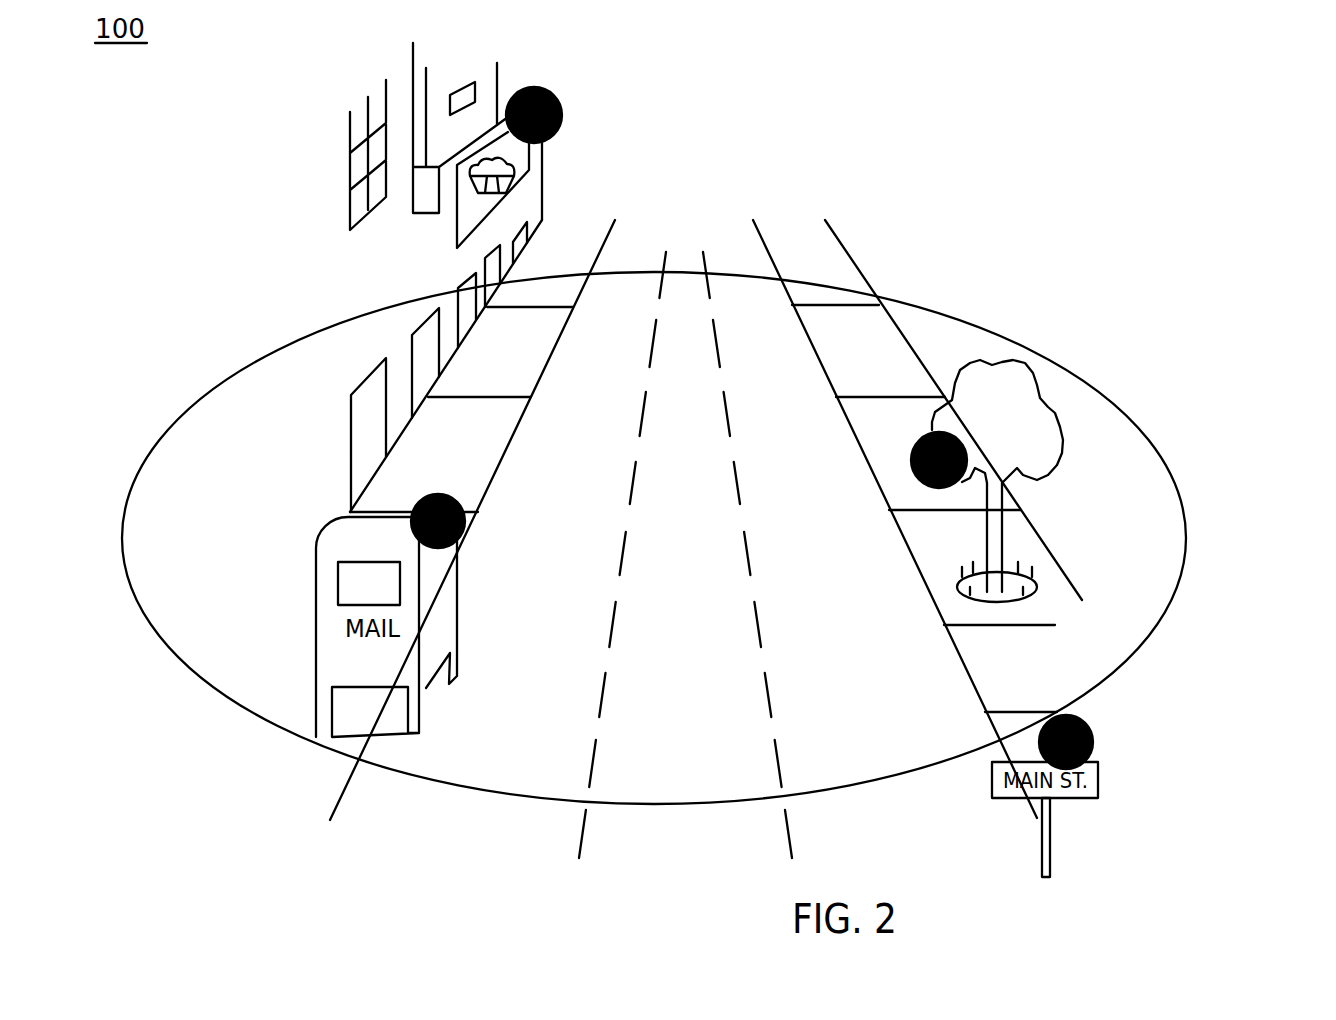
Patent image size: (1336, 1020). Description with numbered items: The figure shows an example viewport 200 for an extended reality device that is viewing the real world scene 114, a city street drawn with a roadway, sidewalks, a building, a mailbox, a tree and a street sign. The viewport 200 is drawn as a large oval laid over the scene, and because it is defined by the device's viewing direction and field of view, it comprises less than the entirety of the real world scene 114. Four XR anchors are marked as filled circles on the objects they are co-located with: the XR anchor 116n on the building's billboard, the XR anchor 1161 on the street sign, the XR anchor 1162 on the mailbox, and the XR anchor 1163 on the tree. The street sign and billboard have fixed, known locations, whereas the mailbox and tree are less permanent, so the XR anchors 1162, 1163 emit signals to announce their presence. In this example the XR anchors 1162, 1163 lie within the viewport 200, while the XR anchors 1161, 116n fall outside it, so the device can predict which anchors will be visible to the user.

The real world scene 114 is at (705, 859).
The viewport 200 is at (1185, 537).
The XR anchor 116n is at (563, 117).
The XR anchor 1161 is at (1093, 740).
The XR anchor 1162 is at (465, 516).
The XR anchor 1163 is at (910, 460).